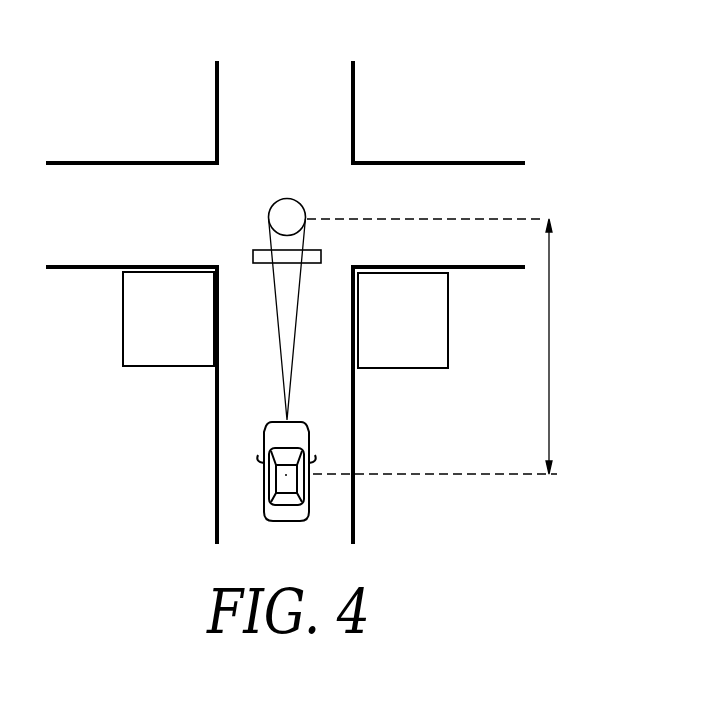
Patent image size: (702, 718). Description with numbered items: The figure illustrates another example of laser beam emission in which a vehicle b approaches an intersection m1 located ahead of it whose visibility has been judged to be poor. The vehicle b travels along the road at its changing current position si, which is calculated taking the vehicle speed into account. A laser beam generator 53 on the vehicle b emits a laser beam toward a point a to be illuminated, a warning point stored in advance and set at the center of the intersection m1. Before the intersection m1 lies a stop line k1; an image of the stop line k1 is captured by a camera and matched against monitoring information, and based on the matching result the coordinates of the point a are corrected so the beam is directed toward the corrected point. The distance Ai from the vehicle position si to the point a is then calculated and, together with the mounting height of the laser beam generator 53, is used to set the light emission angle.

The intersection m1 is at (355, 161).
The point to be illuminated a is at (285, 216).
The stop line k1 is at (322, 257).
The laser beam generator 53 is at (288, 421).
The vehicle b is at (311, 442).
The current position of the vehicle si is at (284, 476).
The distance Ai is at (443, 346).